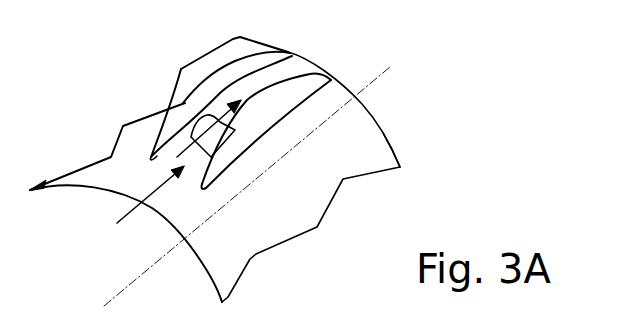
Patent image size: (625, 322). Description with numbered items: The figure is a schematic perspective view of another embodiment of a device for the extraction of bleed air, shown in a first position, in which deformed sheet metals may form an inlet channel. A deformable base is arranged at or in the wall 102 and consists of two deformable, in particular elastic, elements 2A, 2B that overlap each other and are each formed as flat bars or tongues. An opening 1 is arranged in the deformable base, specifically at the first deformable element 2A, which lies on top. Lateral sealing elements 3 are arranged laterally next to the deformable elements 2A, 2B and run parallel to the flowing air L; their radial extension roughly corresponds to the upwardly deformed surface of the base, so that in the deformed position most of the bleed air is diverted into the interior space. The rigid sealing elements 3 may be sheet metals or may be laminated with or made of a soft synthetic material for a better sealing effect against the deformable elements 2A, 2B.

The opening 1 is at (170, 106).
The first deformable element 2A is at (170, 131).
The second deformable element 2B is at (263, 78).
The lateral sealing element 3 is at (226, 78).
The wall 102 is at (245, 230).
The flowing air L is at (143, 204).